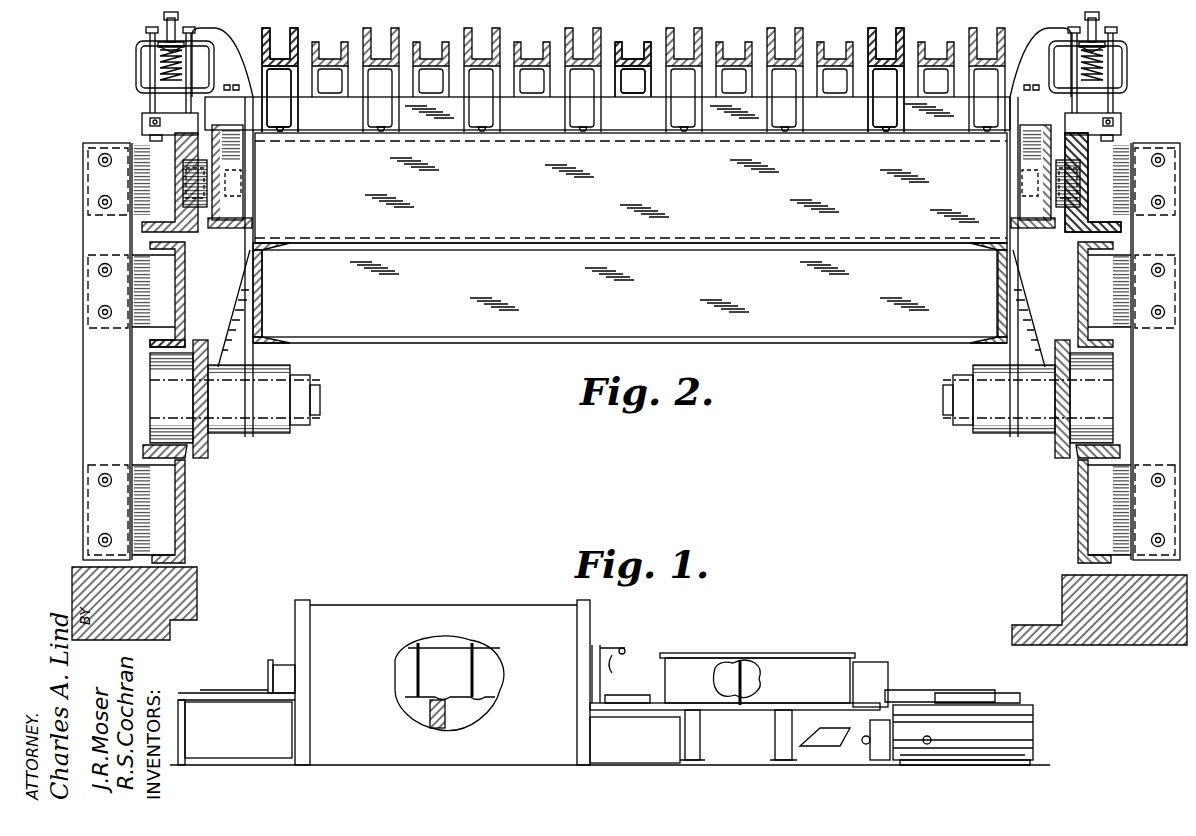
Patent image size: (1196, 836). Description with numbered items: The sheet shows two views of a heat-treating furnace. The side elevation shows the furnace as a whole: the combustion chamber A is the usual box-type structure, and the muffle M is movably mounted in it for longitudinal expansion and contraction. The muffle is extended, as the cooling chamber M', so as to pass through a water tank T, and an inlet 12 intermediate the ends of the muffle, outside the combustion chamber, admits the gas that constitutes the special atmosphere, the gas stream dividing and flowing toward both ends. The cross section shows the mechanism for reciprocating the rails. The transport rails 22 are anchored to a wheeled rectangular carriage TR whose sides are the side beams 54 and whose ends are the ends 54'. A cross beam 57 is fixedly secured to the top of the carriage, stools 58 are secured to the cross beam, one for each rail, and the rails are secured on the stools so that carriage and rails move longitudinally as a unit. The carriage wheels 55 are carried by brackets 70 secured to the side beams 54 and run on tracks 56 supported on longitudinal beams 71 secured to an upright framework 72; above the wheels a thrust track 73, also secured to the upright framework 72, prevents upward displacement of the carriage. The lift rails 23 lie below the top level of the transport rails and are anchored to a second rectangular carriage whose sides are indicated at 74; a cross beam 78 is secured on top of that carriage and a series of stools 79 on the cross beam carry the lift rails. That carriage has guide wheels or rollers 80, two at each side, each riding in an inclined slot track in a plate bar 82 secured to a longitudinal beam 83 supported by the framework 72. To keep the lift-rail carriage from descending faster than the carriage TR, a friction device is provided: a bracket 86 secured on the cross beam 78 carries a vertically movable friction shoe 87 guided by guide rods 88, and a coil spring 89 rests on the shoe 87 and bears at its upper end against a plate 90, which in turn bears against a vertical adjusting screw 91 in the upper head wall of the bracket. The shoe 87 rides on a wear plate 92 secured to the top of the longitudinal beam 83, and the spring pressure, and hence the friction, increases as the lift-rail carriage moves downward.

In FIG. 2, the transport rails 22 is at (660, 42).
In FIG. 2, the lift rails 23 is at (319, 47).
In FIG. 2, the stools 58 is at (298, 106).
In FIG. 2, the cross beam 78 is at (350, 115).
In FIG. 2, the stools 79 is at (622, 90).
In FIG. 2, the cross beam 57 is at (631, 188).
In FIG. 2, the side beams of carriage 54 is at (631, 338).
In FIG. 2, the ends of carriage 54' is at (389, 360).
In FIG. 2, the wheeled rectangular carriage TR is at (487, 328).
In FIG. 2, the upright framework 72 is at (86, 405).
In FIG. 2, the longitudinal beams 71 is at (186, 515).
In FIG. 2, the thrust track 73 is at (185, 340).
In FIG. 2, the brackets 70 is at (230, 318).
In FIG. 2, the carriage wheels 55 is at (155, 372).
In FIG. 2, the tracks 56 is at (143, 448).
In FIG. 2, the guide wheels or rollers 80 is at (205, 210).
In FIG. 2, the sides of carriage 74 is at (245, 225).
In FIG. 2, the longitudinal beam 83 is at (142, 135).
In FIG. 2, the plate bar 82 is at (1072, 238).
In FIG. 2, the friction shoe 87 is at (145, 112).
In FIG. 2, the wear plate 92 is at (148, 124).
In FIG. 2, the bracket 86 is at (228, 54).
In FIG. 2, the plate 90 is at (138, 45).
In FIG. 2, the vertical adjusting screw 91 is at (165, 18).
In FIG. 2, the guide rods 88 is at (150, 62).
In FIG. 2, the coil spring 89 is at (165, 82).
In FIG. 1, the combustion chamber A is at (455, 613).
In FIG. 1, the muffle M is at (449, 670).
In FIG. 1, the inlet 12 is at (622, 651).
In FIG. 1, the water tank T is at (808, 670).
In FIG. 1, the cooling chamber M' is at (736, 656).